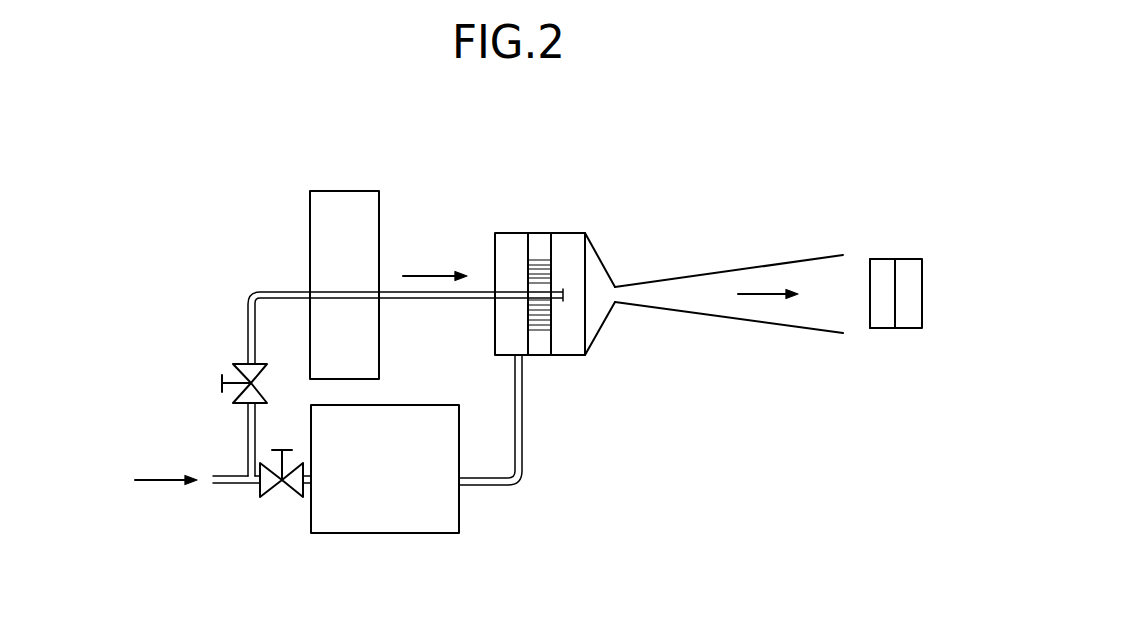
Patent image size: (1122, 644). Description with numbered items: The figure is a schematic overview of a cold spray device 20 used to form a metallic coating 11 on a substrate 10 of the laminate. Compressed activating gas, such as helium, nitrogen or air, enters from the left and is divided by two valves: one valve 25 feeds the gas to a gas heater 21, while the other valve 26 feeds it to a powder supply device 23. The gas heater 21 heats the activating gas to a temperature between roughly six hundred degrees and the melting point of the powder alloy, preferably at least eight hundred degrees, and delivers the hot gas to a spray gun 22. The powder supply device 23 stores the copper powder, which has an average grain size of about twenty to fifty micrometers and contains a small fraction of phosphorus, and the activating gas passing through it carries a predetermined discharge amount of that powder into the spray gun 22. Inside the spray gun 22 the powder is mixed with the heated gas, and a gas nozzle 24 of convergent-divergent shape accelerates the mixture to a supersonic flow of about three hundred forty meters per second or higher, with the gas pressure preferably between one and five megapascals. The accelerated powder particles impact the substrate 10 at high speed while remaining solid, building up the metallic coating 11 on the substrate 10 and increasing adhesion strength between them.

The substrate 10 is at (912, 258).
The metallic coating 11 is at (878, 258).
The cold spray device 20 is at (694, 154).
The gas heater 21 is at (415, 535).
The spray gun 22 is at (570, 233).
The powder supply device 23 is at (341, 190).
The gas nozzle 24 is at (710, 315).
The valve 25 is at (275, 498).
The valve 26 is at (222, 383).